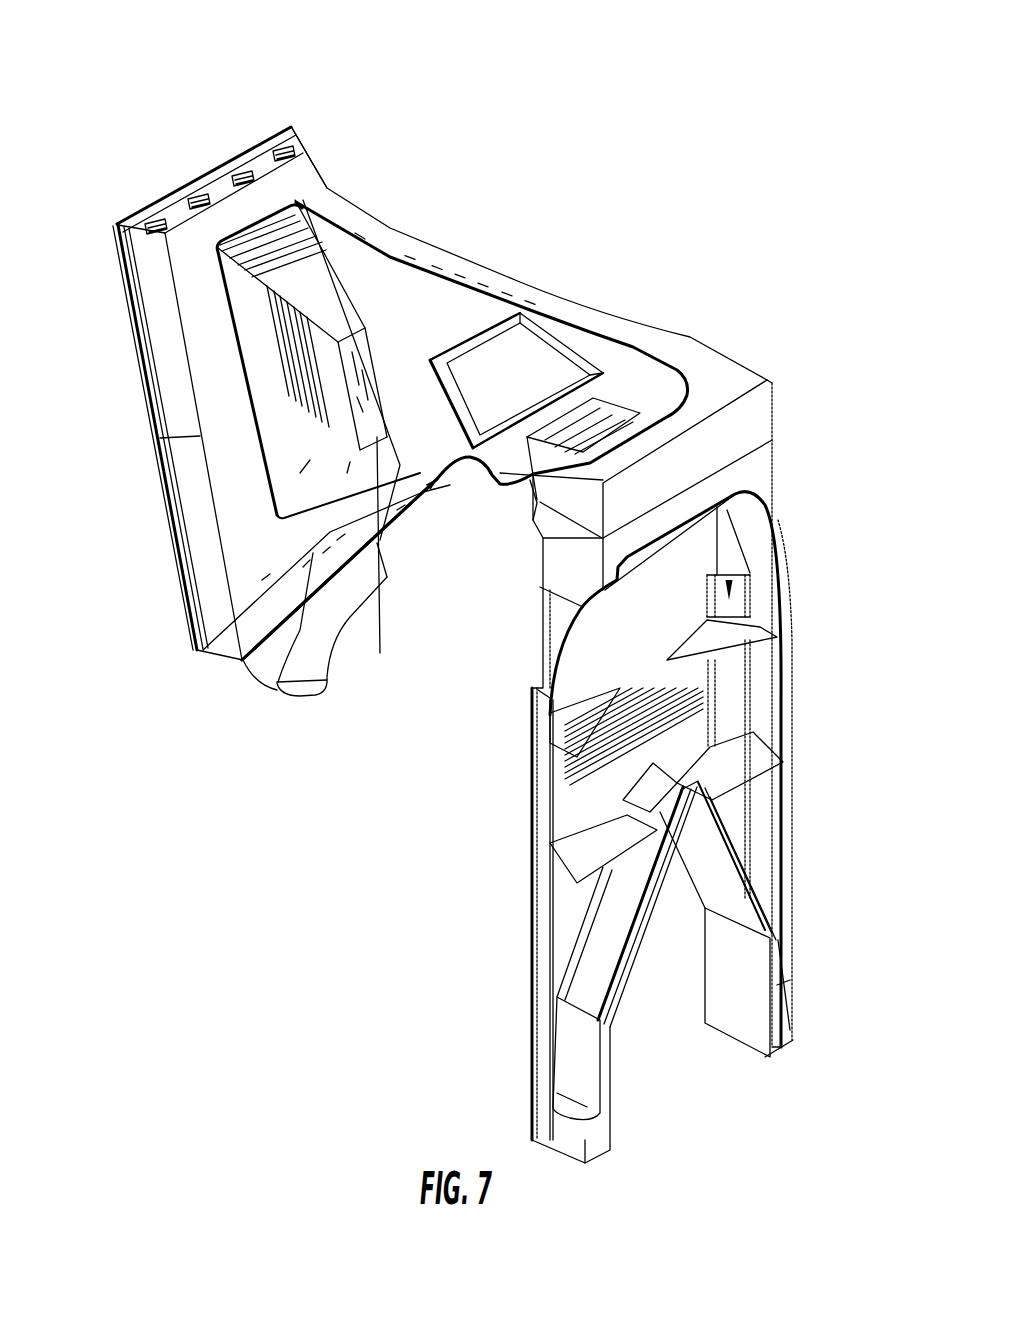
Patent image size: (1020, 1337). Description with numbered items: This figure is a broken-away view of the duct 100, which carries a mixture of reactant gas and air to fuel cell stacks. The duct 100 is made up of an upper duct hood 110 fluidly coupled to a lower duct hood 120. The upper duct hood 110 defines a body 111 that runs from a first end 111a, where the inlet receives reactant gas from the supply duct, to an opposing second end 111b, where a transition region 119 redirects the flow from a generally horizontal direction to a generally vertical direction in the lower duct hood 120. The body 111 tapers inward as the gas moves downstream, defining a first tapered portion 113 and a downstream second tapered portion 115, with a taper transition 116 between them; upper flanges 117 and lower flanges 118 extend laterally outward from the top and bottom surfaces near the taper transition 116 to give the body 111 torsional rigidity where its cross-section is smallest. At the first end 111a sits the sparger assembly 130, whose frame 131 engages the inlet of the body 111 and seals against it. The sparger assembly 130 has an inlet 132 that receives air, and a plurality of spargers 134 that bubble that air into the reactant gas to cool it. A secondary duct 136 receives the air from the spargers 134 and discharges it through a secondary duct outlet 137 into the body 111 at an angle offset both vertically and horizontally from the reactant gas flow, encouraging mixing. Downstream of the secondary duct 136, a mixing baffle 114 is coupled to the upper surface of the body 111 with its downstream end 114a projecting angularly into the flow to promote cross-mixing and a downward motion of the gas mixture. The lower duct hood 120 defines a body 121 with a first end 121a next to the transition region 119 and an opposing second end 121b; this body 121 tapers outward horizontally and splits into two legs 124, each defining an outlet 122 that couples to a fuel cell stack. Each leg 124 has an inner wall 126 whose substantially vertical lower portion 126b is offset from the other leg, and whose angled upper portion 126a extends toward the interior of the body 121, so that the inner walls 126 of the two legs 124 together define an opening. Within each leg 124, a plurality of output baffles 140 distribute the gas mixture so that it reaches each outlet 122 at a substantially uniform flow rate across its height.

The duct 100 is at (80, 125).
The sparger assembly 130 is at (211, 165).
The frame 131 is at (222, 625).
The secondary duct 136 is at (303, 273).
The secondary duct outlet 137 is at (300, 473).
The spargers 134 is at (347, 473).
The first tapered portion 113 is at (258, 570).
The lower flanges 118 is at (410, 503).
The inlet 132 is at (322, 695).
The taper transition 116 is at (379, 600).
The second tapered portion 115 is at (430, 475).
The body 111 is at (427, 258).
The first end 111a is at (314, 148).
The upper duct hood 110 is at (494, 264).
The upper flanges 117 is at (360, 238).
The second end 111b is at (547, 289).
The mixing baffle 114 is at (527, 363).
The downstream end 114a is at (567, 393).
The transition region 119 is at (728, 380).
The first end 121a is at (794, 440).
The lower duct hood 120 is at (802, 731).
The body 121 is at (787, 667).
The outlet 122 is at (740, 578).
The output baffles 140 is at (750, 700).
The legs 124 is at (805, 931).
The inner wall 126 is at (742, 953).
The upper portion 126a is at (727, 890).
The lower portion 126b is at (738, 1027).
The second end 121b is at (805, 1050).